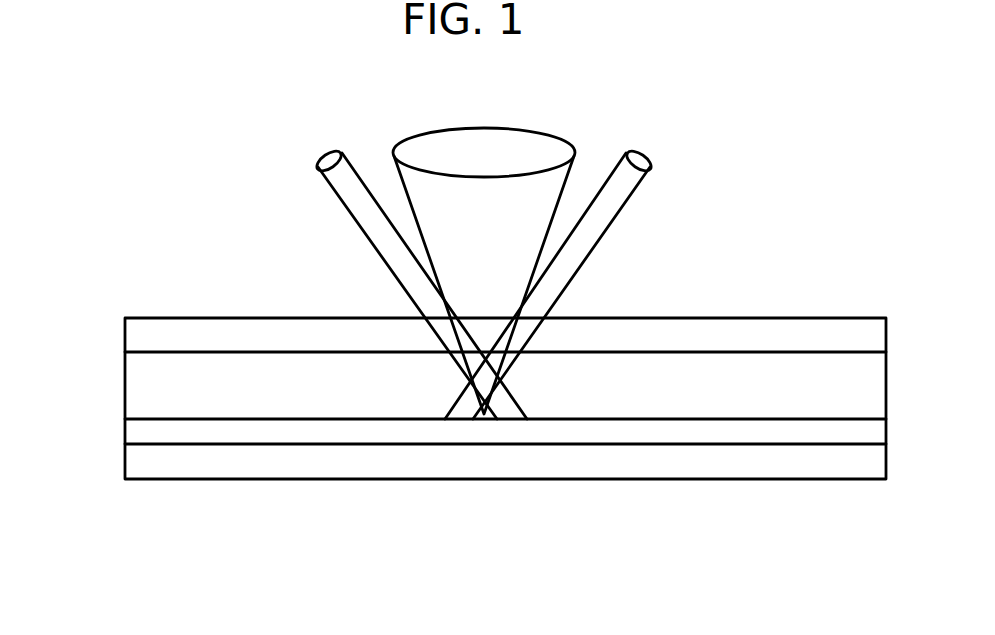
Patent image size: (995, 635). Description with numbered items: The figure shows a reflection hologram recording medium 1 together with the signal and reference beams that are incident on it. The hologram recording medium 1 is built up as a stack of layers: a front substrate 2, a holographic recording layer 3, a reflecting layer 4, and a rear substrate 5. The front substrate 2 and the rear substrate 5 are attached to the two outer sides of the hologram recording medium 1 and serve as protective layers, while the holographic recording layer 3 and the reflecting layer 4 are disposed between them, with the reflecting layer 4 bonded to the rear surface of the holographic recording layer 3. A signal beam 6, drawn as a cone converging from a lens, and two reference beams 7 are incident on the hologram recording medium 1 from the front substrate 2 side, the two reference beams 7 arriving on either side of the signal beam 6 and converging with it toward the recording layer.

The reflection hologram recording medium 1 is at (68, 307).
The front substrate 2 is at (125, 334).
The holographic recording layer 3 is at (125, 386).
The reflecting layer 4 is at (125, 431).
The rear substrate 5 is at (125, 465).
The signal beam 6 is at (507, 128).
The reference beam 7 is at (323, 150).